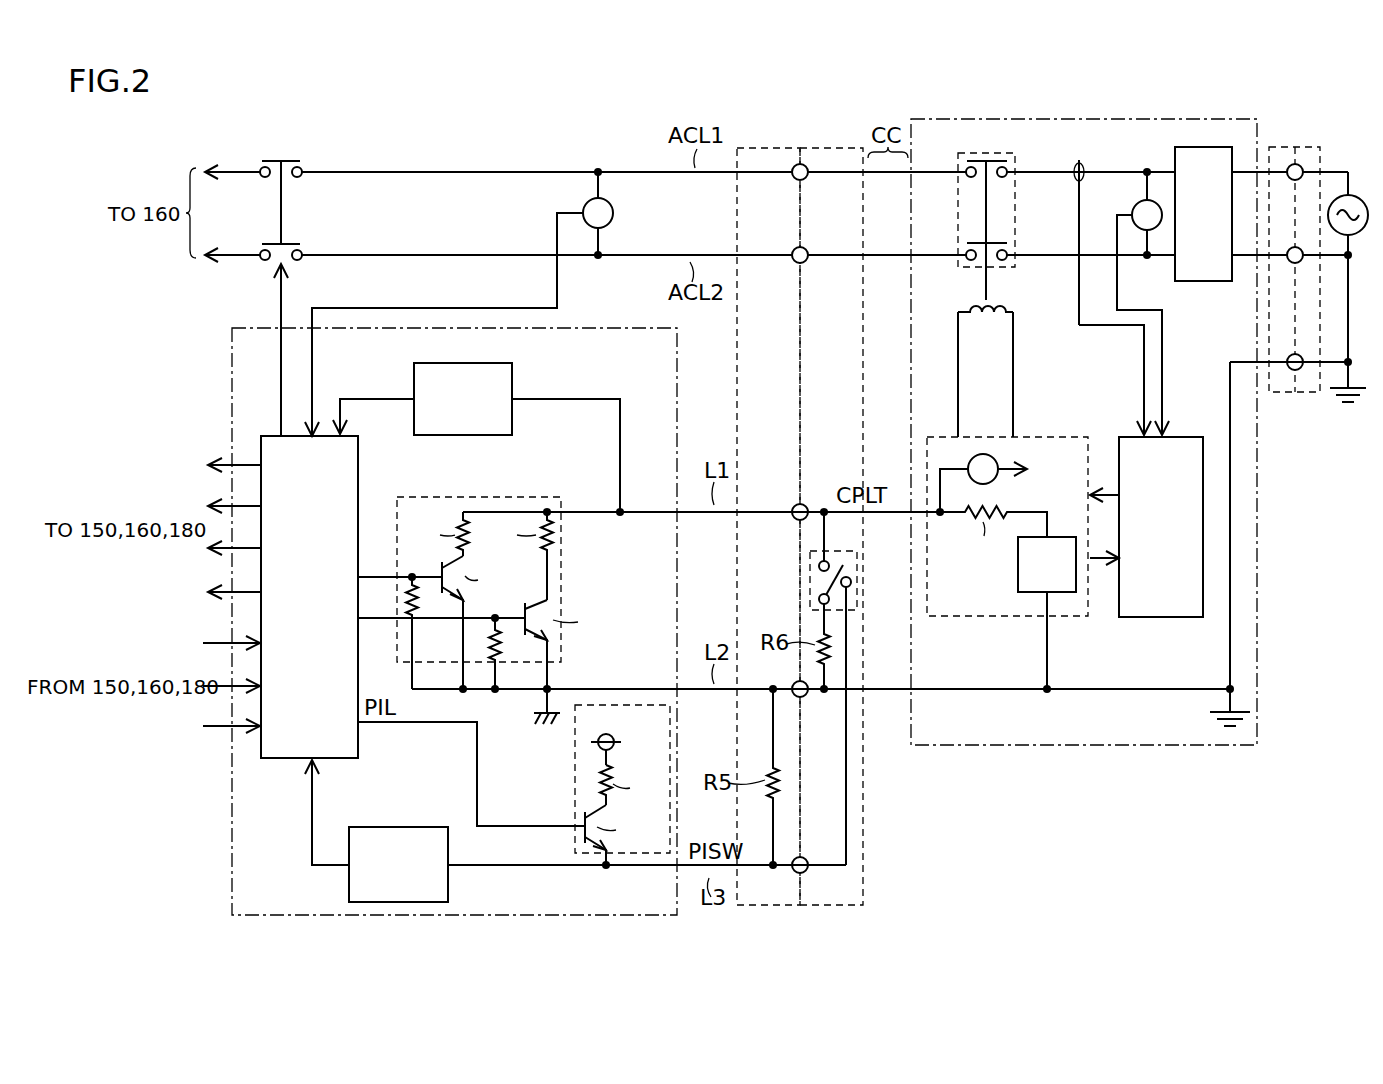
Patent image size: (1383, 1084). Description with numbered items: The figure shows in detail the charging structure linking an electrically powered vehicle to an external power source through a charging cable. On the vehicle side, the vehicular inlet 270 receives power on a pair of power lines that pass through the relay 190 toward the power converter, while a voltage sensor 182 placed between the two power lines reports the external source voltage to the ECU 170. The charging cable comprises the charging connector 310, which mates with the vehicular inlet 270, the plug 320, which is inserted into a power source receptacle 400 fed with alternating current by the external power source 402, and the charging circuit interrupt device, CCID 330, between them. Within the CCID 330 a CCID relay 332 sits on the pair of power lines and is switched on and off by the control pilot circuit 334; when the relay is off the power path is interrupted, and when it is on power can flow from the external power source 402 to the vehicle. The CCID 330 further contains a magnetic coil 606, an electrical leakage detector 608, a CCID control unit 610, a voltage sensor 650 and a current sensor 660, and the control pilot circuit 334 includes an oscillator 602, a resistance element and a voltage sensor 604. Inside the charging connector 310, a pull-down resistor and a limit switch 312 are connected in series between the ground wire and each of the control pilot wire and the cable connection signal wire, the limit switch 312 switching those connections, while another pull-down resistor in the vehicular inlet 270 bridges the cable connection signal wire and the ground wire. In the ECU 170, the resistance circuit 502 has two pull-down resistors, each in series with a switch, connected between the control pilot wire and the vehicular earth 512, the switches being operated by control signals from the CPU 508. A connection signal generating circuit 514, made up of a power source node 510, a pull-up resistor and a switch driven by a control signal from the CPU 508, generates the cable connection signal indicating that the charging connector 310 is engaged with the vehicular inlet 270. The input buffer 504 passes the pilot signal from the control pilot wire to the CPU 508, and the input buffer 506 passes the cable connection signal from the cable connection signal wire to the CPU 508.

The relay 190 is at (291, 160).
The voltage sensor 182 is at (614, 213).
The ECU 170 is at (630, 326).
The vehicular inlet 270 is at (764, 146).
The charging connector 310 is at (826, 146).
The limit switch 312 is at (810, 586).
The charging circuit interrupt device (CCID) 330 is at (1160, 118).
The CCID relay 332 is at (986, 148).
The control pilot circuit 334 is at (1007, 563).
The plug 320 is at (1280, 146).
The power source receptacle 400 is at (1304, 244).
The external power source 402 is at (1344, 194).
The current sensor 660 is at (1075, 160).
The voltage sensor 650 is at (1138, 200).
The electrical leakage detector 608 is at (1205, 283).
The magnetic coil 606 is at (968, 304).
The voltage sensor 604 is at (998, 478).
The oscillator 602 is at (1015, 580).
The CCID control unit 610 is at (1185, 437).
The input buffer 504 is at (462, 364).
The resistance circuit 502 is at (480, 497).
The input buffer 506 is at (394, 834).
The CPU 508 is at (278, 760).
The power source node 510 is at (613, 738).
The vehicular earth 512 is at (540, 726).
The connection signal generating circuit 514 is at (591, 787).